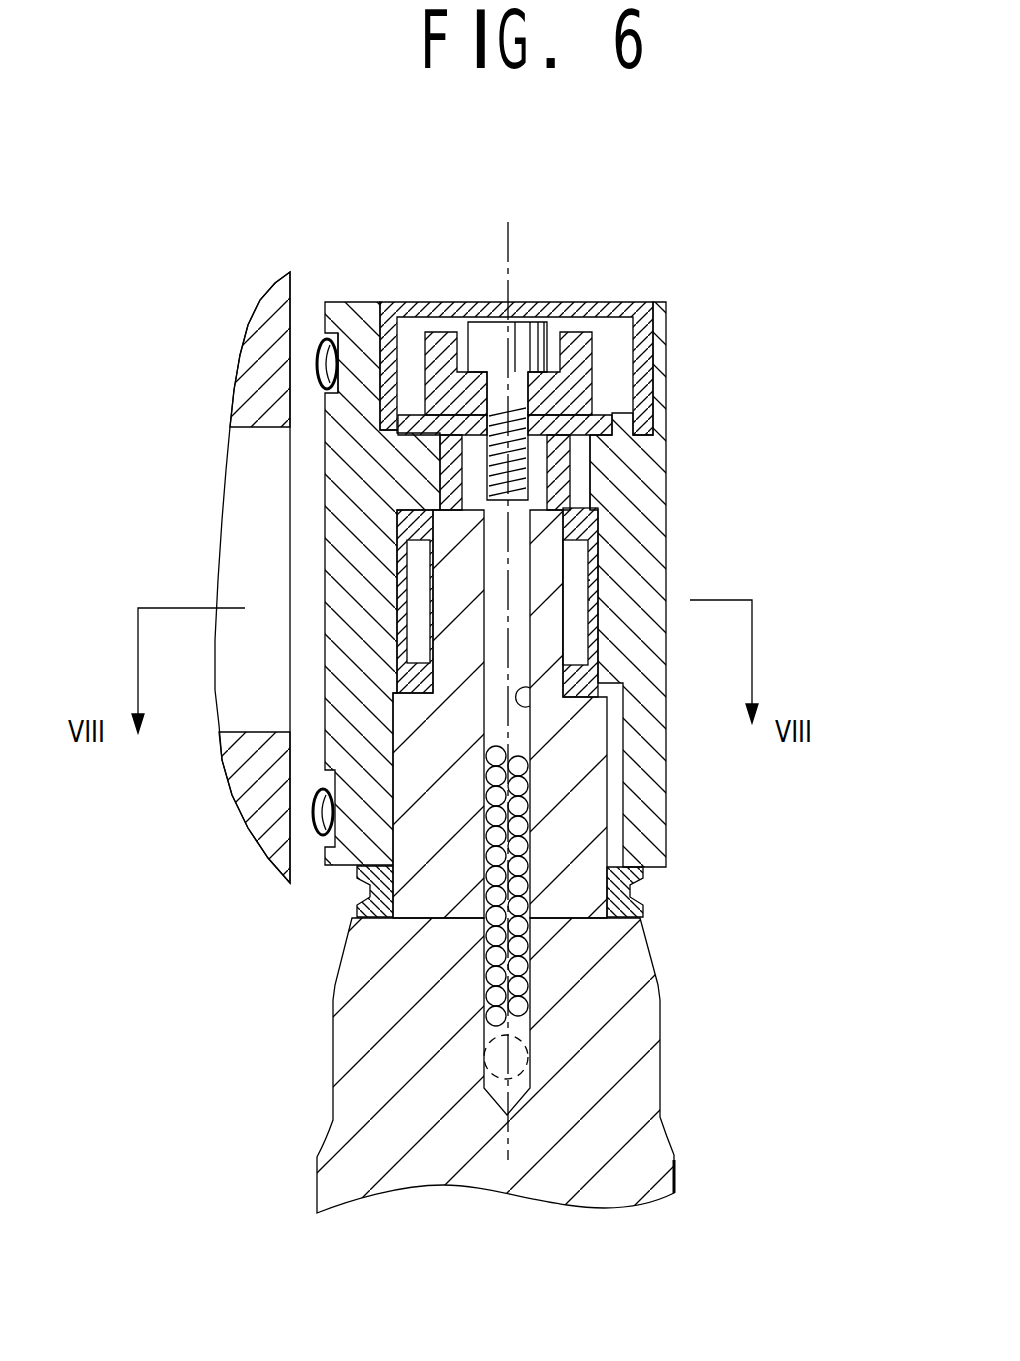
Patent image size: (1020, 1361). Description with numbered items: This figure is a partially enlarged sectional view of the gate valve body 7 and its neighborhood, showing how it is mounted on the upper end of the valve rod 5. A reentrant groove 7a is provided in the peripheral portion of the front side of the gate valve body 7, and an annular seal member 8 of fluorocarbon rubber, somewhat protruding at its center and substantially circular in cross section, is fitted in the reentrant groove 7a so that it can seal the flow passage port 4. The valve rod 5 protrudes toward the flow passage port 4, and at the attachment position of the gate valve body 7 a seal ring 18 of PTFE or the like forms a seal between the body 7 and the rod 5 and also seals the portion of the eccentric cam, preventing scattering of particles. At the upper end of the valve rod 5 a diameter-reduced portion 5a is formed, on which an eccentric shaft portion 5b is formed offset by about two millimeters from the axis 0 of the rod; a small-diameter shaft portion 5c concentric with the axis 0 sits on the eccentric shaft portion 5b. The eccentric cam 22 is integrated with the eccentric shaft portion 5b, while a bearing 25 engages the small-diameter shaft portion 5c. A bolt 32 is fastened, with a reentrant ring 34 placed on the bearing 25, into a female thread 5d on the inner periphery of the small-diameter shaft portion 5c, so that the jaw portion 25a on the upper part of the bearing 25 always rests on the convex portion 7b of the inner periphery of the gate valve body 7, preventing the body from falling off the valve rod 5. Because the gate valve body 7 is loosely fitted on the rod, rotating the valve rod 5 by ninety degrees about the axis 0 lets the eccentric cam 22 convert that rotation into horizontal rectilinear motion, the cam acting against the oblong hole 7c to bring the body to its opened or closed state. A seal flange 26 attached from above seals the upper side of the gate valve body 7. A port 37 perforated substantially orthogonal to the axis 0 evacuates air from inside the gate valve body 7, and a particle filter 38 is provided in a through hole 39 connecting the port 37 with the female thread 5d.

The axis 0 is at (510, 659).
The flow passage port 4 is at (258, 728).
The valve rod 5 is at (655, 1150).
The diameter-reduced portion 5a is at (583, 820).
The eccentric shaft portion 5b is at (450, 604).
The small-diameter shaft portion 5c is at (545, 457).
The female thread 5d is at (492, 463).
The gate valve body 7 is at (666, 562).
The reentrant groove 7a is at (345, 330).
The convex portion 7b is at (585, 480).
The oblong hole 7c is at (600, 580).
The seal member 8 is at (320, 357).
The seal ring 18 is at (640, 888).
The eccentric cam 22 is at (408, 566).
The bearing 25 is at (605, 421).
The jaw portion 25a is at (402, 423).
The seal flange 26 is at (643, 302).
The bolt 32 is at (530, 302).
The reentrant ring 34 is at (596, 302).
The port 37 is at (527, 1060).
The particle filter 38 is at (480, 987).
The through hole 39 is at (530, 700).